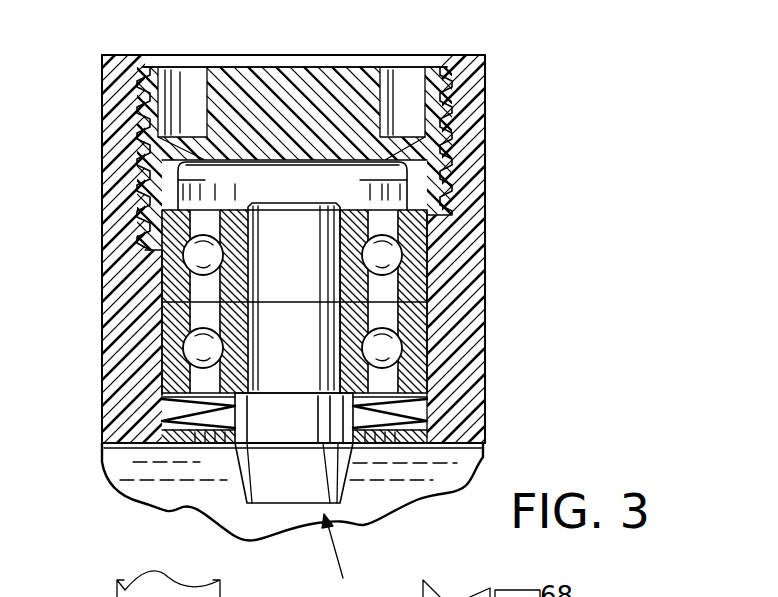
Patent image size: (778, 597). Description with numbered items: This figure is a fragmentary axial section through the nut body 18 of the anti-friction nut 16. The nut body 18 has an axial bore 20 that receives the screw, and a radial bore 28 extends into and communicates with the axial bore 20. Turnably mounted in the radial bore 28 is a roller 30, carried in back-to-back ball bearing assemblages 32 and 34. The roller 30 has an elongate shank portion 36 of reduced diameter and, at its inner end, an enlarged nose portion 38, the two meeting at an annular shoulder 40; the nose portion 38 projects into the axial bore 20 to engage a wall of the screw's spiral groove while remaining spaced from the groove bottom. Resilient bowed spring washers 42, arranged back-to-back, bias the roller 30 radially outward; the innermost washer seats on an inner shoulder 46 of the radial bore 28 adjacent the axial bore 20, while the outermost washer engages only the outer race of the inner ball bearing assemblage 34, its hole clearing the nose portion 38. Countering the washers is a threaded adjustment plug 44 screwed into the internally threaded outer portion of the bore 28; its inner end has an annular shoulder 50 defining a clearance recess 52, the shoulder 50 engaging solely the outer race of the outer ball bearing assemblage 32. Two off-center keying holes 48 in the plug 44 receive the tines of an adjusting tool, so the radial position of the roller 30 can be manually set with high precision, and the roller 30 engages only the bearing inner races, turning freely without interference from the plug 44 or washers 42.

The anti-friction nut 16 is at (444, 41).
The nut body 18 is at (472, 140).
The axial bore 20 is at (372, 516).
The radial bore 28 is at (287, 379).
The roller 30 is at (317, 193).
The ball bearing assemblage 32 is at (163, 287).
The ball bearing assemblage 34 is at (163, 382).
The shank portion 36 is at (300, 285).
The nose portion 38 is at (302, 487).
The annular shoulder 40 is at (262, 393).
The spring washers 42 is at (437, 410).
The threaded adjustment plug 44 is at (272, 72).
The inner shoulder 46 is at (178, 445).
The keying holes 48 is at (178, 70).
The annular shoulder 50 is at (150, 184).
The clearance recess 52 is at (420, 190).